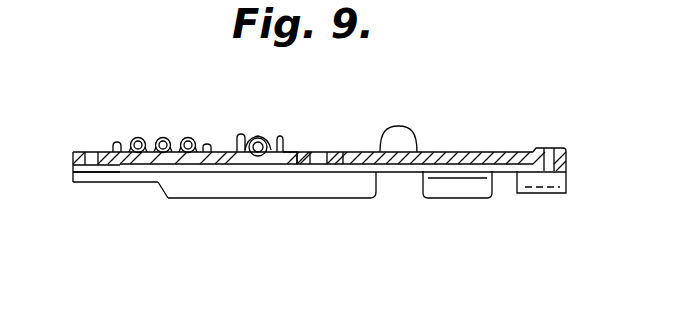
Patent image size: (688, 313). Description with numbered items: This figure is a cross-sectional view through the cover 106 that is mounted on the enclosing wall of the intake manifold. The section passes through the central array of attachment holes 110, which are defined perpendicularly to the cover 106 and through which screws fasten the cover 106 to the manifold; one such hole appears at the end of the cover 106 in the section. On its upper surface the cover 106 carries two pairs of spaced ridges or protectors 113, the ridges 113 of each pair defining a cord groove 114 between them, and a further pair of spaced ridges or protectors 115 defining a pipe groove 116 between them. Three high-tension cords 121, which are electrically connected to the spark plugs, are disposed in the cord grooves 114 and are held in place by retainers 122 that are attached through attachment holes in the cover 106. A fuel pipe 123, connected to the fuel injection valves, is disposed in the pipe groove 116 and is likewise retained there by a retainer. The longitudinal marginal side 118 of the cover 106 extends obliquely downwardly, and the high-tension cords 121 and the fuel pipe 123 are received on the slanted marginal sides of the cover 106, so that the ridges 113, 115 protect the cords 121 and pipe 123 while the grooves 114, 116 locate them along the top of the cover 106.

The cover 106 is at (500, 148).
The attachment holes 110 is at (92, 165).
The ridges 113 is at (118, 143).
The cord groove 114 is at (168, 167).
The ridges 115 is at (278, 137).
The pipe groove 116 is at (253, 158).
The marginal side 118 is at (352, 190).
The high-tension cords 121 is at (186, 137).
The retainers 122 is at (137, 176).
The fuel pipe 123 is at (281, 141).